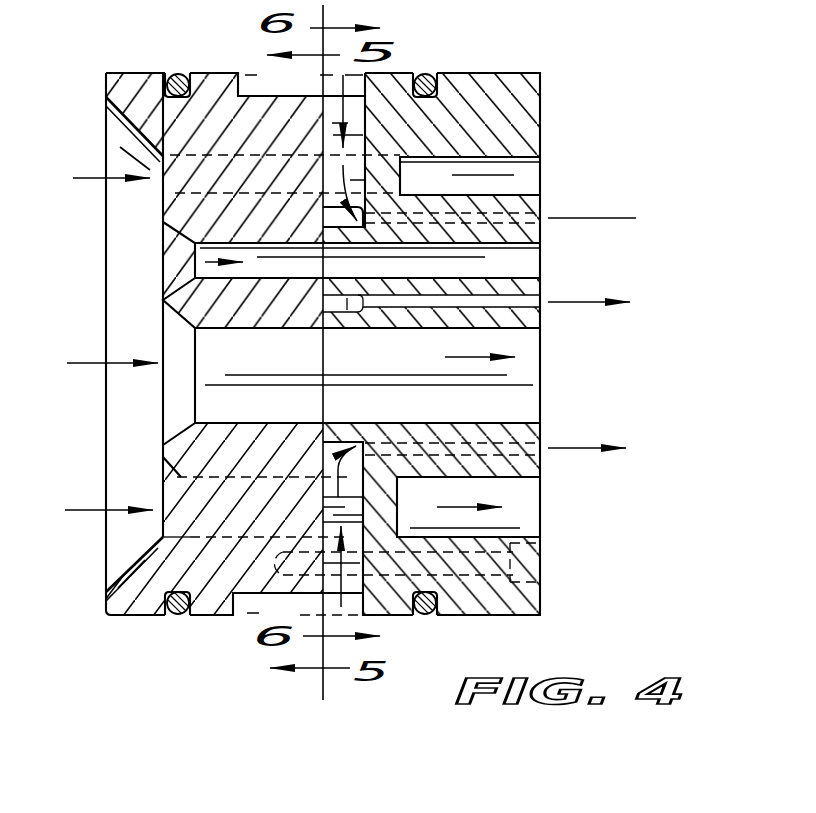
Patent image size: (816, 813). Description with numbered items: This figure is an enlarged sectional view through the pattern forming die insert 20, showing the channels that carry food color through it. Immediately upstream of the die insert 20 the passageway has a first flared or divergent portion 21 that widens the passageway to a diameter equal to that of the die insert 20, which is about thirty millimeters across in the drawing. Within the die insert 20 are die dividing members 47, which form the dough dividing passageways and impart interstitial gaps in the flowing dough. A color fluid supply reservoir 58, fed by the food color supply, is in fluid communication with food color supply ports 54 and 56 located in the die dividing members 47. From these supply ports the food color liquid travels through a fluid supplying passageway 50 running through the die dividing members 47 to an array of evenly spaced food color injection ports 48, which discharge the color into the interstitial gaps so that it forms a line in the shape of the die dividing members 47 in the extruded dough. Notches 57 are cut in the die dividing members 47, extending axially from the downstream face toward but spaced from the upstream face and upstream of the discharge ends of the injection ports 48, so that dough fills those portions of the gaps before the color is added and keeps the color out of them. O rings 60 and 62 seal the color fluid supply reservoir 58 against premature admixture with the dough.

The pattern forming die insert 20 is at (541, 75).
The first flared or divergent portion 21 is at (135, 130).
The die dividing members 47 is at (530, 237).
The food color injection ports 48 is at (545, 212).
The fluid supplying passageway 50 is at (338, 445).
The food color supply port 54 is at (333, 103).
The food color supply port 56 is at (333, 593).
The notches 57 is at (527, 183).
The color fluid supply reservoir 58 is at (252, 82).
The O ring 60 is at (173, 72).
The O ring 62 is at (428, 73).